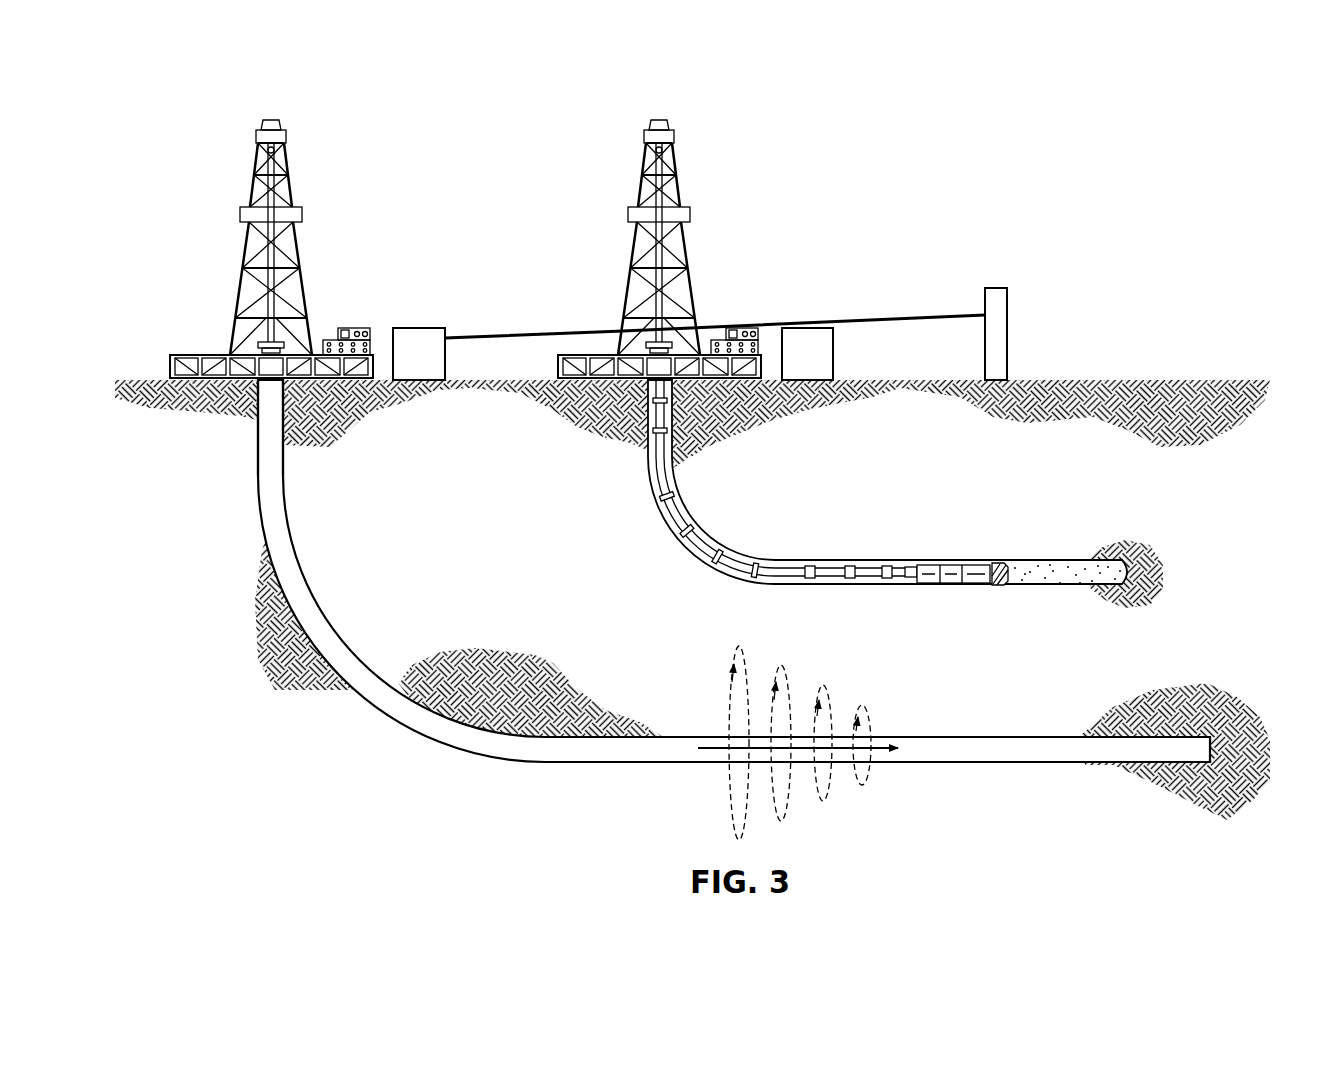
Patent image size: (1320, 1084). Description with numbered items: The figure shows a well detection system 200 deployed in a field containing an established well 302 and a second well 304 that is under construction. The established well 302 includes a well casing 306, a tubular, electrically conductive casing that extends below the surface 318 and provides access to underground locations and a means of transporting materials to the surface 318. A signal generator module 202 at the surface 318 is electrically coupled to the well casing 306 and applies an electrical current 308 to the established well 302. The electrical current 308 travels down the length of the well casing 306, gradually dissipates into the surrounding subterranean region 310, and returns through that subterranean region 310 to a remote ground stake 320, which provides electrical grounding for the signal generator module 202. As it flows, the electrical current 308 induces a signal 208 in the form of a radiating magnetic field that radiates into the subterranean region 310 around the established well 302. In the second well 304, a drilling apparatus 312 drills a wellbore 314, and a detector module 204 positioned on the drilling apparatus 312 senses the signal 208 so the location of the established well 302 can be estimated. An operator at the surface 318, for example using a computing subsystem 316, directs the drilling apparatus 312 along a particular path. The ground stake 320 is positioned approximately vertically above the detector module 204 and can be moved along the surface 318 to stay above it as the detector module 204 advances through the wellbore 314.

The well detection system 200 is at (1010, 141).
The signal generator module 202 is at (415, 326).
The detector module 204 is at (893, 566).
The signal 208 is at (718, 707).
The established well 302 is at (348, 720).
The second well 304 is at (1007, 516).
The well casing 306 is at (258, 457).
The electrical current 308 is at (713, 752).
The subterranean region 310 is at (481, 611).
The drilling apparatus 312 is at (980, 596).
The wellbore 314 is at (1078, 582).
The computing subsystem 316 is at (835, 352).
The surface 318 is at (1117, 380).
The ground stake 320 is at (997, 288).